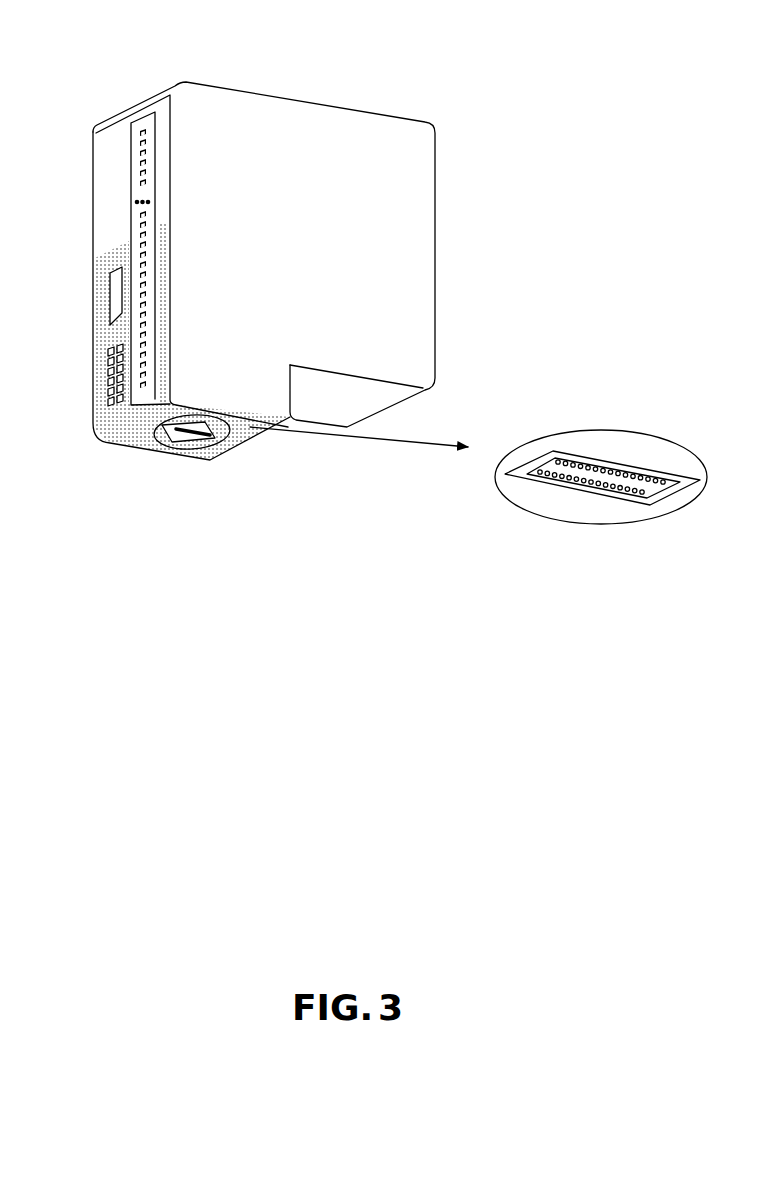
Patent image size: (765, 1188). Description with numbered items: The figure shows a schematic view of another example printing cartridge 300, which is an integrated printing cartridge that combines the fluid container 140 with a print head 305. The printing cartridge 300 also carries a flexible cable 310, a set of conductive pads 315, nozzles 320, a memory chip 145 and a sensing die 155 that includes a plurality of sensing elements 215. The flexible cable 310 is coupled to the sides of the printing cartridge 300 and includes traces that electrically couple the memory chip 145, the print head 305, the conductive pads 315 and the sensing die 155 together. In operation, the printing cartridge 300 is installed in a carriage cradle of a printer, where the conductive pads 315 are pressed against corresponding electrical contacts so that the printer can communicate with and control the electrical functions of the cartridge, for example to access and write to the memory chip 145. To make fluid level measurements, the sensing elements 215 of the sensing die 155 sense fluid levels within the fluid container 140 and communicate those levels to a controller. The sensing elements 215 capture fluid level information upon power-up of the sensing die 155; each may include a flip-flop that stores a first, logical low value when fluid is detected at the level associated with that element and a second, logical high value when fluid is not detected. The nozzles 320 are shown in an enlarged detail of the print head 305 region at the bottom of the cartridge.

The printing cartridge 300 is at (145, 60).
The fluid container 140 is at (412, 250).
The memory chip 145 is at (112, 298).
The sensing die 155 is at (129, 195).
The sensing elements 215 is at (131, 133).
The print head 305 is at (243, 443).
The flexible cable 310 is at (110, 340).
The conductive pads 315 is at (110, 390).
The nozzles 320 is at (588, 462).